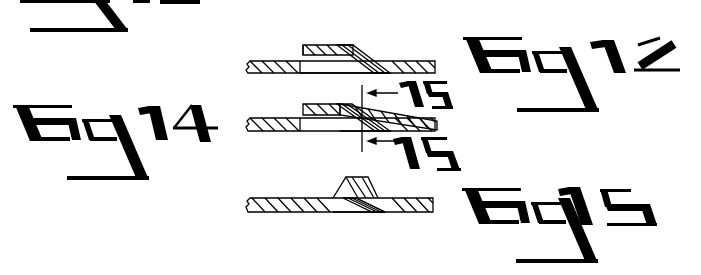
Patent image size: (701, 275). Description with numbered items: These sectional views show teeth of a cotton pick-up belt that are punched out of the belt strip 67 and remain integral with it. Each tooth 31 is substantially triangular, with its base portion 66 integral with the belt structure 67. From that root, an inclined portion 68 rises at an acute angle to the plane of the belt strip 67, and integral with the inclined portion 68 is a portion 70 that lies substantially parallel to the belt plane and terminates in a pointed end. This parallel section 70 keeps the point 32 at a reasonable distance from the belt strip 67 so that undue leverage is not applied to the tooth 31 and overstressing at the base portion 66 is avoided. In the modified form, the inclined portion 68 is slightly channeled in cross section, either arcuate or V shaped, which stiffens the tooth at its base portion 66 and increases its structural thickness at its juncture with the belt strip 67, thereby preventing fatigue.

In FIG. 12, the tooth 31 is at (351, 46).
In FIG. 14, the tooth 31 is at (330, 131).
In FIG. 15, the tooth 31 is at (364, 205).
In FIG. 12, the point 32 is at (303, 50).
In FIG. 12, the base portion 66 is at (383, 62).
In FIG. 14, the base portion 66 is at (434, 126).
In FIG. 12, the belt strip 67 is at (437, 70).
In FIG. 14, the belt strip 67 is at (340, 124).
In FIG. 15, the belt strip 67 is at (262, 212).
In FIG. 12, the inclined portion 68 is at (340, 72).
In FIG. 14, the inclined portion 68 is at (360, 131).
In FIG. 15, the inclined portion 68 is at (375, 190).
In FIG. 12, the parallel portion 70 is at (326, 47).
In FIG. 14, the parallel portion 70 is at (303, 107).
In FIG. 15, the parallel portion 70 is at (365, 178).